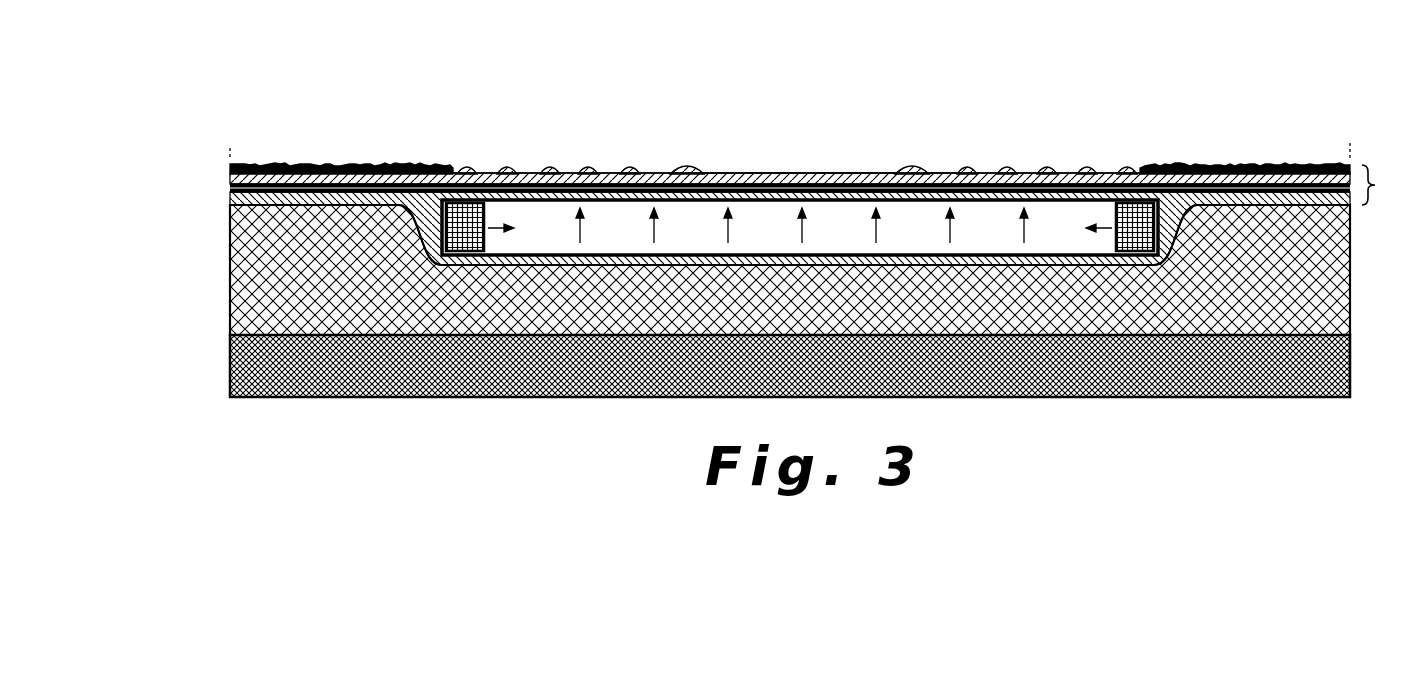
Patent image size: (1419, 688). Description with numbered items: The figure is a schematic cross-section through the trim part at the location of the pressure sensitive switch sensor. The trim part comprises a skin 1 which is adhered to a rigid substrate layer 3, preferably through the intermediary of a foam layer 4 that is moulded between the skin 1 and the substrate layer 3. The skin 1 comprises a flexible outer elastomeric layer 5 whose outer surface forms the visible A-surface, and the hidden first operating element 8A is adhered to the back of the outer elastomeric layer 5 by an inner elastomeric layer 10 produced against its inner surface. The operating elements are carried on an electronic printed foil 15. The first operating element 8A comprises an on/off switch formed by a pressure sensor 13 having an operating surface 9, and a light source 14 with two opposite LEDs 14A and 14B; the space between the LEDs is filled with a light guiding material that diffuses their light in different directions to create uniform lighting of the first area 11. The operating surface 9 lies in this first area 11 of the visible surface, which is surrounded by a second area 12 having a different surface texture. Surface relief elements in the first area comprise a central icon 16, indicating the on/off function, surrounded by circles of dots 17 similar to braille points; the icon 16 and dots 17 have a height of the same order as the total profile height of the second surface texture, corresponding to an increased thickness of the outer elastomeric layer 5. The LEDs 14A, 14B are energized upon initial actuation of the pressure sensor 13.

The skin 1 is at (1382, 185).
The substrate layer 3 is at (1325, 372).
The foam layer 4 is at (1322, 278).
The outer elastomeric layer 5 is at (232, 175).
The first operating element 8A is at (640, 168).
The operating surface 9 is at (750, 171).
The inner elastomeric layer 10 is at (232, 196).
The first area 11 is at (962, 137).
The second area 12 is at (348, 140).
The pressure sensor 13 is at (588, 167).
The light source 14 is at (555, 225).
The LED 14A is at (465, 240).
The LED 14B is at (1138, 250).
The electronic printed foil 15 is at (300, 195).
The central icon 16 is at (913, 168).
The dots 17 is at (1165, 65).